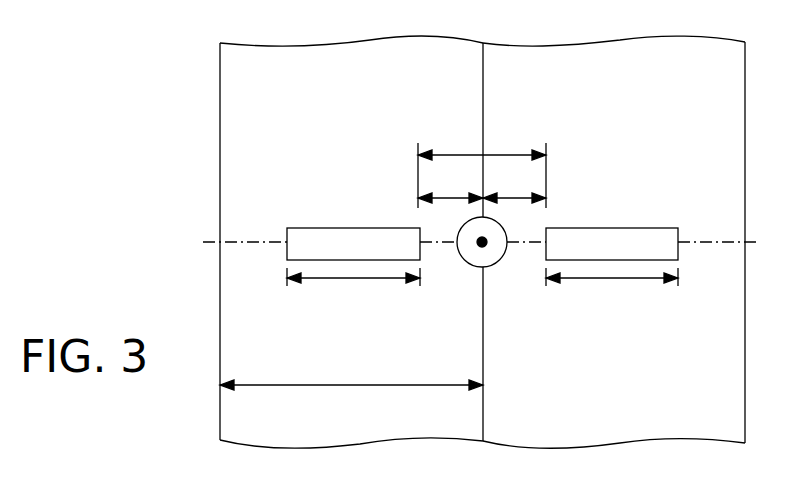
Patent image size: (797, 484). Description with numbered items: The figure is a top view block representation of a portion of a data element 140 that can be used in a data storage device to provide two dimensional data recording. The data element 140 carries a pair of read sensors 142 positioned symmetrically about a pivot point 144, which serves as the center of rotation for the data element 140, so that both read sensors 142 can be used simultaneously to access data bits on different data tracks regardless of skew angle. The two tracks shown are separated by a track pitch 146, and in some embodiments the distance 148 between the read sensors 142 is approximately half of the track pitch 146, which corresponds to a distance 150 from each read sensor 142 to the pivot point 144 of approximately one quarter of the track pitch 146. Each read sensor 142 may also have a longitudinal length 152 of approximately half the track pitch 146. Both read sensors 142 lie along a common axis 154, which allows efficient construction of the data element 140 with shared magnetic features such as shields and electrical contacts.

The data element 140 is at (210, 66).
The read sensor 142 is at (482, 244).
The pivot point 144 is at (490, 265).
The track pitch 146 is at (351, 396).
The distance between read sensors 148 is at (482, 169).
The distance from read sensor to pivot point 150 is at (482, 186).
The longitudinal length 152 is at (482, 286).
The common axis 154 is at (470, 254).